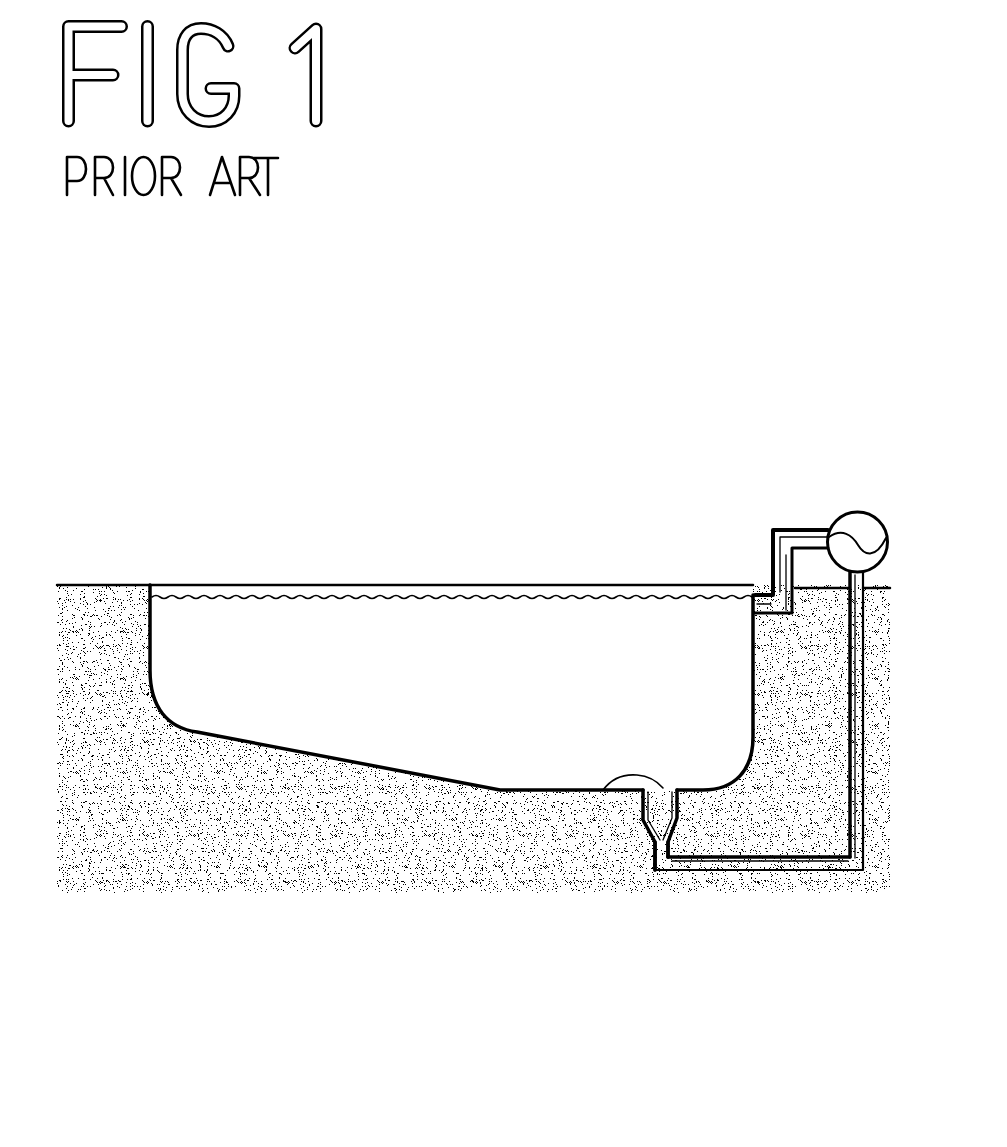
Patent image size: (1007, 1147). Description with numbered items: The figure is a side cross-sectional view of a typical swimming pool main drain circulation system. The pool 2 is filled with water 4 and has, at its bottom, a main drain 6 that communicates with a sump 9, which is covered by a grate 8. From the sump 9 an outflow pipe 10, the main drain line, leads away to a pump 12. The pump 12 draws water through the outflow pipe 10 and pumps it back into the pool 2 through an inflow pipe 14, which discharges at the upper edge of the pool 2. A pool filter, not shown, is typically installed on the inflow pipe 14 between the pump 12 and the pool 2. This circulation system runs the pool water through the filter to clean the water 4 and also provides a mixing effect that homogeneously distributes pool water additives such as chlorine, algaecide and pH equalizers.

The pool 2 is at (572, 357).
The water 4 is at (285, 630).
The main drain 6 is at (655, 790).
The grate 8 is at (613, 781).
The sump 9 is at (677, 807).
The outflow pipe 10 is at (812, 864).
The pump 12 is at (858, 512).
The inflow pipe 14 is at (802, 528).